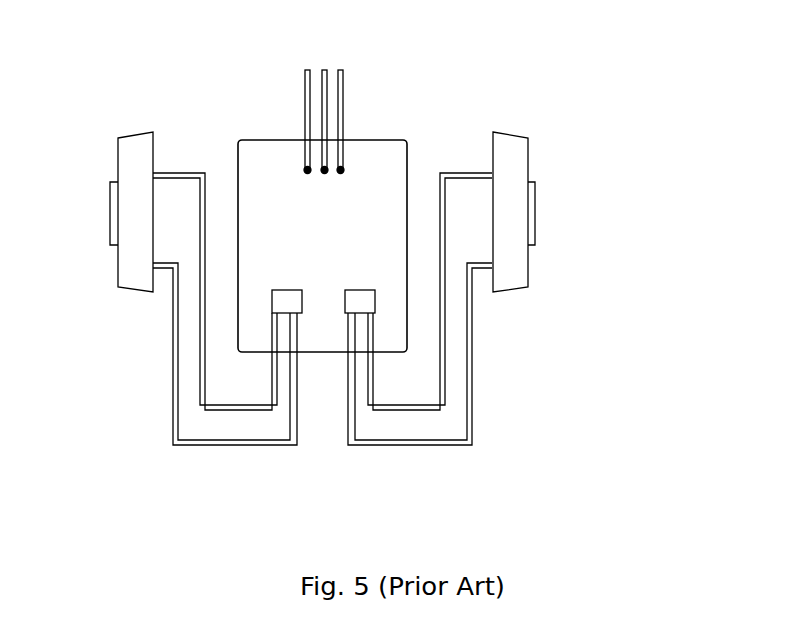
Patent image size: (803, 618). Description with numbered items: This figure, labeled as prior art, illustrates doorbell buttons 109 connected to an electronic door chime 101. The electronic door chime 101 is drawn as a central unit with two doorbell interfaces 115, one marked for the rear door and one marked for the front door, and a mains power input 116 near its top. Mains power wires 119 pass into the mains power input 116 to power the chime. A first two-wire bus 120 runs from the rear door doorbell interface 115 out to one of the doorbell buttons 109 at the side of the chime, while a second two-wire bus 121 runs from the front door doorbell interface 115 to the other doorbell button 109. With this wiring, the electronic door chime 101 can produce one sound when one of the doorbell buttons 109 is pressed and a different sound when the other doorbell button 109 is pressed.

The electronic door chime 101 is at (277, 173).
The doorbell button 109 is at (132, 240).
The doorbell interface 115 is at (282, 302).
The mains power input 116 is at (340, 162).
The mains power wires 119 is at (333, 93).
The first two-wire bus 120 is at (257, 410).
The second two-wire bus 121 is at (417, 412).